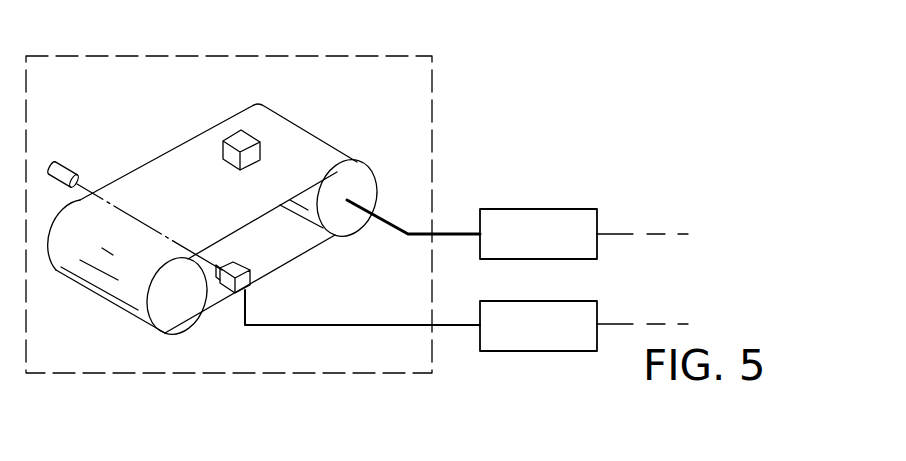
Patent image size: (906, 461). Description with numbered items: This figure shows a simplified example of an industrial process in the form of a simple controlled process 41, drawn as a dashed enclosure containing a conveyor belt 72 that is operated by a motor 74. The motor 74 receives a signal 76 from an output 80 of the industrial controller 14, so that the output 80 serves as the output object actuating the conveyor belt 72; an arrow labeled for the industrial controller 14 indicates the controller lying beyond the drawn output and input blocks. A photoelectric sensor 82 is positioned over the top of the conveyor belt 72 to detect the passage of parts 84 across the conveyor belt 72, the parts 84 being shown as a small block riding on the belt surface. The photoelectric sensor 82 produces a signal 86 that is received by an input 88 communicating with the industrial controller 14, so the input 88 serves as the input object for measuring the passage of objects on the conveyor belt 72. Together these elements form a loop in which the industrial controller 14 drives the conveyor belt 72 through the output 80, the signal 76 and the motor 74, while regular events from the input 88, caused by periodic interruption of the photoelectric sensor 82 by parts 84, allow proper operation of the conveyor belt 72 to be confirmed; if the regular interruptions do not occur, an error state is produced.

The industrial controller 14 is at (680, 202).
The controlled process 41 is at (432, 55).
The conveyor belt 72 is at (174, 181).
The motor 74 is at (362, 182).
The signal 76 is at (448, 232).
The output 80 is at (565, 209).
The photoelectric sensor 82 is at (250, 264).
The parts 84 is at (232, 133).
The signal 86 is at (449, 327).
The input 88 is at (563, 351).